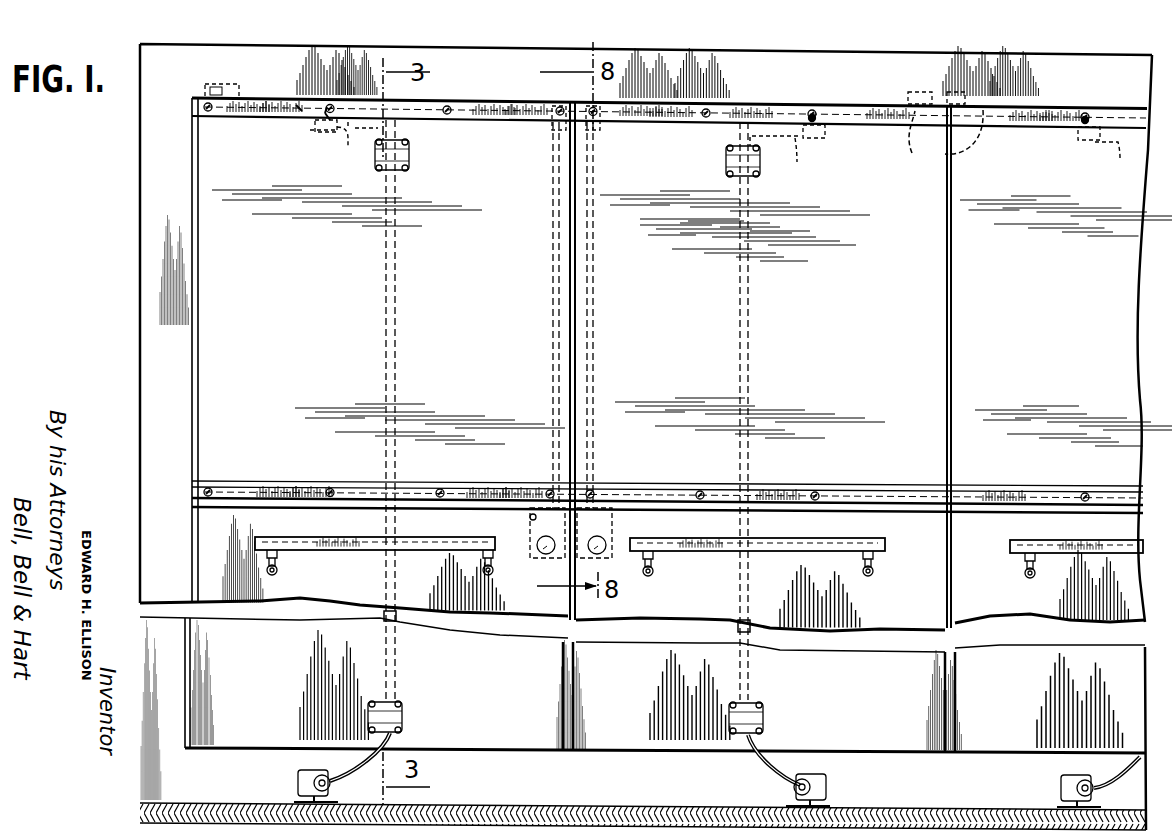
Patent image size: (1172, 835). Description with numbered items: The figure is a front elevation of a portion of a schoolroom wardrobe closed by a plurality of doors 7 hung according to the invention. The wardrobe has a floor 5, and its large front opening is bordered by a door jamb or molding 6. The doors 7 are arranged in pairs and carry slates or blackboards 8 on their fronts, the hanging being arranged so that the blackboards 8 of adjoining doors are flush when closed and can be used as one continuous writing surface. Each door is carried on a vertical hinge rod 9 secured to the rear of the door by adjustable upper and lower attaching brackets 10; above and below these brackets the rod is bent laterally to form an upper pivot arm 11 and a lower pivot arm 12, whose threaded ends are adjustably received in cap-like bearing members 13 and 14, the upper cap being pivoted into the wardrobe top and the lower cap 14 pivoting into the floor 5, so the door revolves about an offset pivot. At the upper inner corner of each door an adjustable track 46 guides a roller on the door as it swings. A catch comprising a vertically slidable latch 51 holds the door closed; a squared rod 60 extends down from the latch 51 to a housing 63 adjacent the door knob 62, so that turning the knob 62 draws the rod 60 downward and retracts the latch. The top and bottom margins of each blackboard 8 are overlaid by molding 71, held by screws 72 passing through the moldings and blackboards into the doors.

The floor 5 is at (525, 805).
The door jamb or molding 6 is at (250, 63).
The doors 7 is at (1000, 763).
The slates 8 is at (220, 353).
The vertical hinge rod 9 is at (795, 353).
The attaching brackets 10 is at (790, 710).
The upper pivot arm 11 is at (725, 148).
The lower pivot arm 12 is at (1120, 768).
The upper cap bearing member 13 is at (1080, 138).
The lower cap bearing member 14 is at (1061, 791).
The track 46 is at (205, 90).
The latch 51 is at (620, 139).
The squared rod 60 is at (585, 259).
The door knob 62 is at (546, 566).
The housing 63 is at (530, 518).
The molding 71 is at (297, 109).
The screws 72 is at (330, 489).